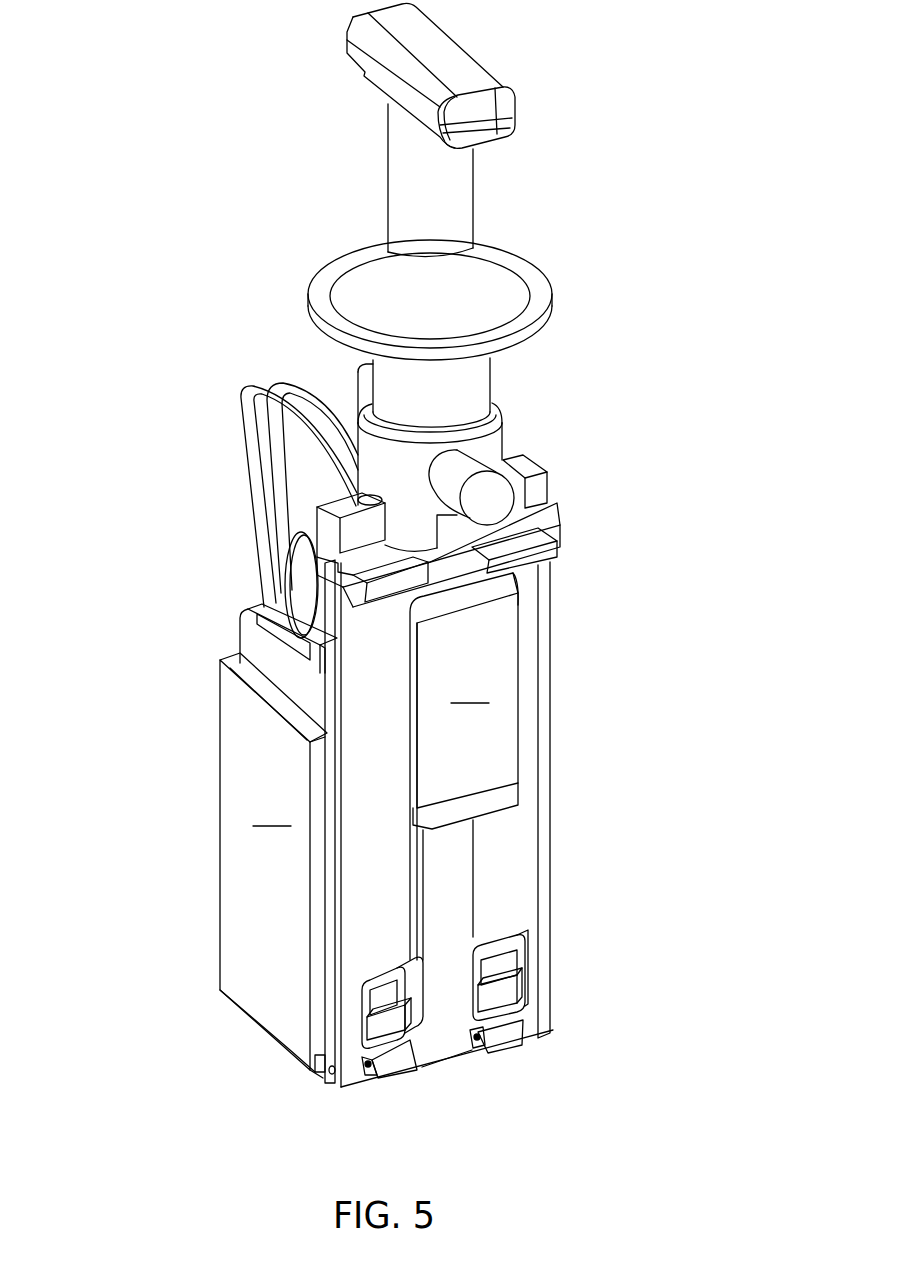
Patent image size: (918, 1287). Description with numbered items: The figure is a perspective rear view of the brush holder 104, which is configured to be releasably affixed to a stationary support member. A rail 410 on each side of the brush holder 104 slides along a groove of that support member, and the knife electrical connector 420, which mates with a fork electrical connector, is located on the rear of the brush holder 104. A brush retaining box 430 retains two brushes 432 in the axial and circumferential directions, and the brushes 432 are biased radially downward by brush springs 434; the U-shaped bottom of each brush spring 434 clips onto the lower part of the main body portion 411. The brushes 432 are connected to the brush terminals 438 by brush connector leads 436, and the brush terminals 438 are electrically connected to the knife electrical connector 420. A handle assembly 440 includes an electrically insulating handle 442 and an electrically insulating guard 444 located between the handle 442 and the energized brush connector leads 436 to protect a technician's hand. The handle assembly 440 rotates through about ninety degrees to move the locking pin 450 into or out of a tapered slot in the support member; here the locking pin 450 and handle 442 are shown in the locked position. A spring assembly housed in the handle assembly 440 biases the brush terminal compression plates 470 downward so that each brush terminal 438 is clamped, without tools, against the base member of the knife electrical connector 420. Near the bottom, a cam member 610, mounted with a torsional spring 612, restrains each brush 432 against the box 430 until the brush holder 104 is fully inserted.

The brush holder 104 is at (560, 133).
The rail 410 is at (551, 838).
The main body portion 411 is at (497, 963).
The knife electrical connector 420 is at (464, 766).
The brush retaining box 430 is at (277, 865).
The brush 432 is at (250, 643).
The brush spring 434 is at (300, 573).
The brush connector lead 436 is at (247, 407).
The brush terminal 438 is at (558, 552).
The handle assembly 440 is at (358, 160).
The handle 442 is at (346, 26).
The guard 444 is at (548, 291).
The locking pin 450 is at (487, 498).
The brush terminal compression plate 470 is at (533, 465).
The cam member 610 is at (400, 1065).
The spring 612 is at (368, 1072).